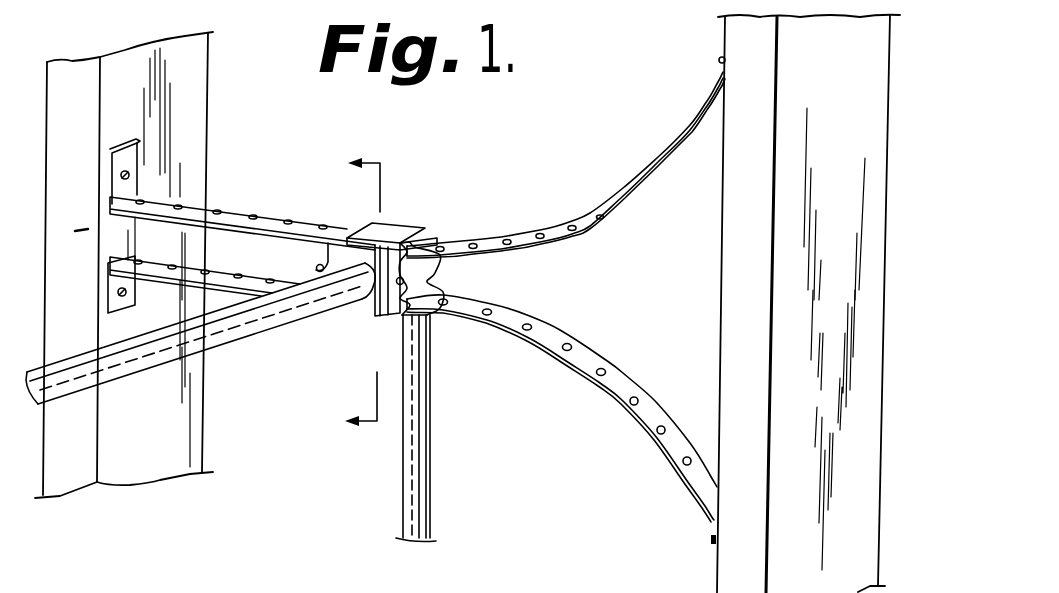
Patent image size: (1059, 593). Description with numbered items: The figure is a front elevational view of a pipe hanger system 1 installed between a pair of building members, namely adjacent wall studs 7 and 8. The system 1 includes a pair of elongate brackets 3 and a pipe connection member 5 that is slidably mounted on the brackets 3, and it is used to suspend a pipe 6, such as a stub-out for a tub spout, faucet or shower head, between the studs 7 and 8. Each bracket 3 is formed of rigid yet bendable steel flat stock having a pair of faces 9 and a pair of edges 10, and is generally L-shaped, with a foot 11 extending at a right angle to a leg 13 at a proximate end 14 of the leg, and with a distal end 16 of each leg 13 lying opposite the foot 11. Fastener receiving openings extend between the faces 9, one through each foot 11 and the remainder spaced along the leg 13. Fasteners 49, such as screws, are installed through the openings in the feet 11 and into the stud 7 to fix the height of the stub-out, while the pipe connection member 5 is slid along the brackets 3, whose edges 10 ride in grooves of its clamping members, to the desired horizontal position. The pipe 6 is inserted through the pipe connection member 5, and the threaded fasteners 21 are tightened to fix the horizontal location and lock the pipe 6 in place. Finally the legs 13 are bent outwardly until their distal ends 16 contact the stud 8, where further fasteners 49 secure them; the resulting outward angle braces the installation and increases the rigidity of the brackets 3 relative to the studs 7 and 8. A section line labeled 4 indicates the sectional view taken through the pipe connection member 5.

The pipe hanger system 1 is at (428, 166).
The elongate brackets 3 is at (242, 274).
The section line 4- 4 is at (367, 293).
The pipe connection member 5 is at (398, 242).
The pipe 6 is at (240, 335).
The wall stud 7 is at (190, 67).
The wall stud 8 is at (793, 296).
The faces 9 is at (231, 286).
The edges 10 is at (263, 230).
The foot 11 is at (128, 145).
The leg 13 is at (528, 232).
The proximate end 14 is at (157, 209).
The distal end 16 is at (725, 43).
The threaded fasteners 21 is at (318, 267).
The fasteners 49 is at (720, 61).